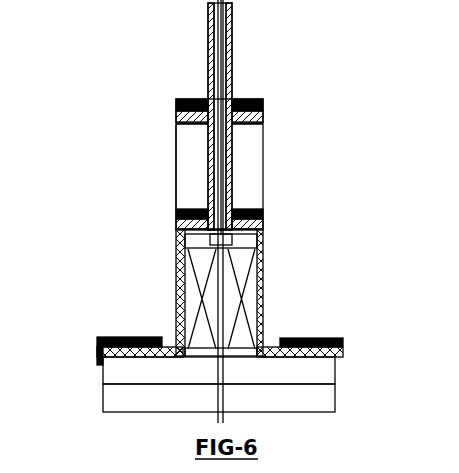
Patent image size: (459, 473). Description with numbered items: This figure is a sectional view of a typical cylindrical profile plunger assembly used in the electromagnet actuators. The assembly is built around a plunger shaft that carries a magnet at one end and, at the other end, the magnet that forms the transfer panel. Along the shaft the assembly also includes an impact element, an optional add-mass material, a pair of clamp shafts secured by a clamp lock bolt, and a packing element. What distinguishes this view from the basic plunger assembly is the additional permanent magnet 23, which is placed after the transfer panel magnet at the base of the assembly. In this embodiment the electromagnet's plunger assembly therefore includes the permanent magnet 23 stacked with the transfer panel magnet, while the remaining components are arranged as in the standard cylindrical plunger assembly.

The permanent magnet 23 is at (327, 371).